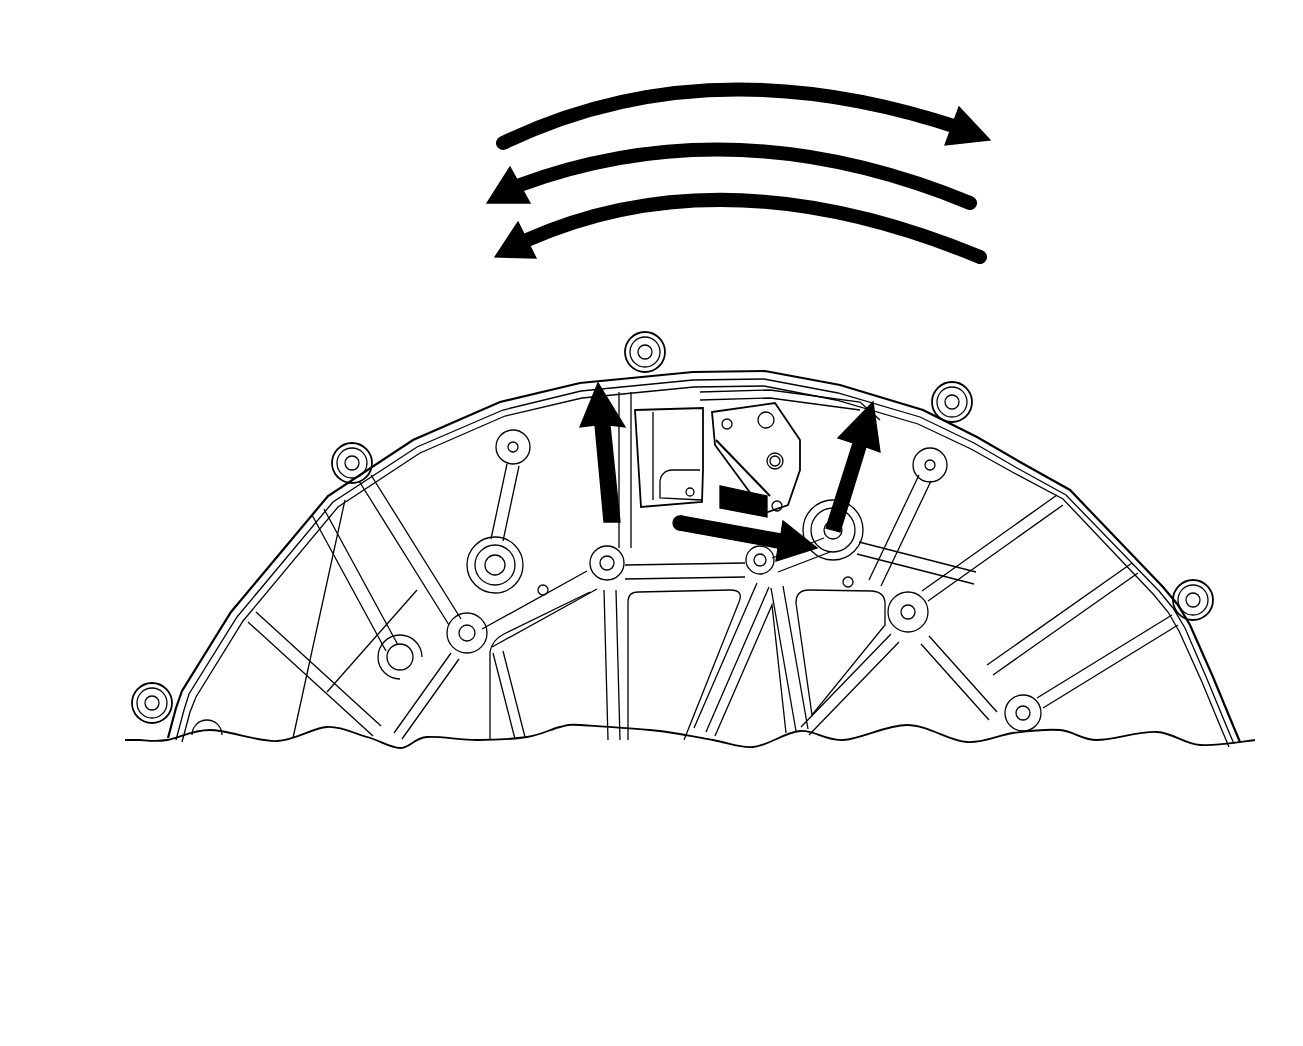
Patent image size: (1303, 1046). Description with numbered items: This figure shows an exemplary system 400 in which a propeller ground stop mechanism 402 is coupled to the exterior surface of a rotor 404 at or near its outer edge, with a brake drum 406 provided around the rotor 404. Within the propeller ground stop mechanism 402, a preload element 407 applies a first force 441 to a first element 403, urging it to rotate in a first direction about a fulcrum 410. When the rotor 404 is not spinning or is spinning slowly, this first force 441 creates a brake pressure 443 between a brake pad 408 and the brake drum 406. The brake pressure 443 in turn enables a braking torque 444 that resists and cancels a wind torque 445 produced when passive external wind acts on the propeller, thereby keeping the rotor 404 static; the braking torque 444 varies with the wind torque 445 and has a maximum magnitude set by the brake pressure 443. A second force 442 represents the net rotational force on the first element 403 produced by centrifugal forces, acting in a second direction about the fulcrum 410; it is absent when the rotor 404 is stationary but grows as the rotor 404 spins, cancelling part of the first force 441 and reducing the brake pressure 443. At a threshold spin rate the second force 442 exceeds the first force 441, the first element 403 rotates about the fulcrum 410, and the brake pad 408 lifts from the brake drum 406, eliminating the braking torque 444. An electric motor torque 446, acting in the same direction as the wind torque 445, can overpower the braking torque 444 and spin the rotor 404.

The system 400 is at (256, 222).
The propeller ground stop mechanism 402 is at (692, 396).
The first element 403 is at (659, 418).
The rotor 404 is at (297, 590).
The brake drum 406 is at (1070, 494).
The preload element 407 is at (738, 542).
The brake pad 408 is at (819, 393).
The fulcrum 410 is at (761, 410).
The first force 441 is at (728, 540).
The second force 442 is at (592, 446).
The brake pressure 443 is at (876, 436).
The braking torque 444 is at (930, 122).
The wind torque 445 is at (975, 204).
The electric motor torque 446 is at (985, 258).